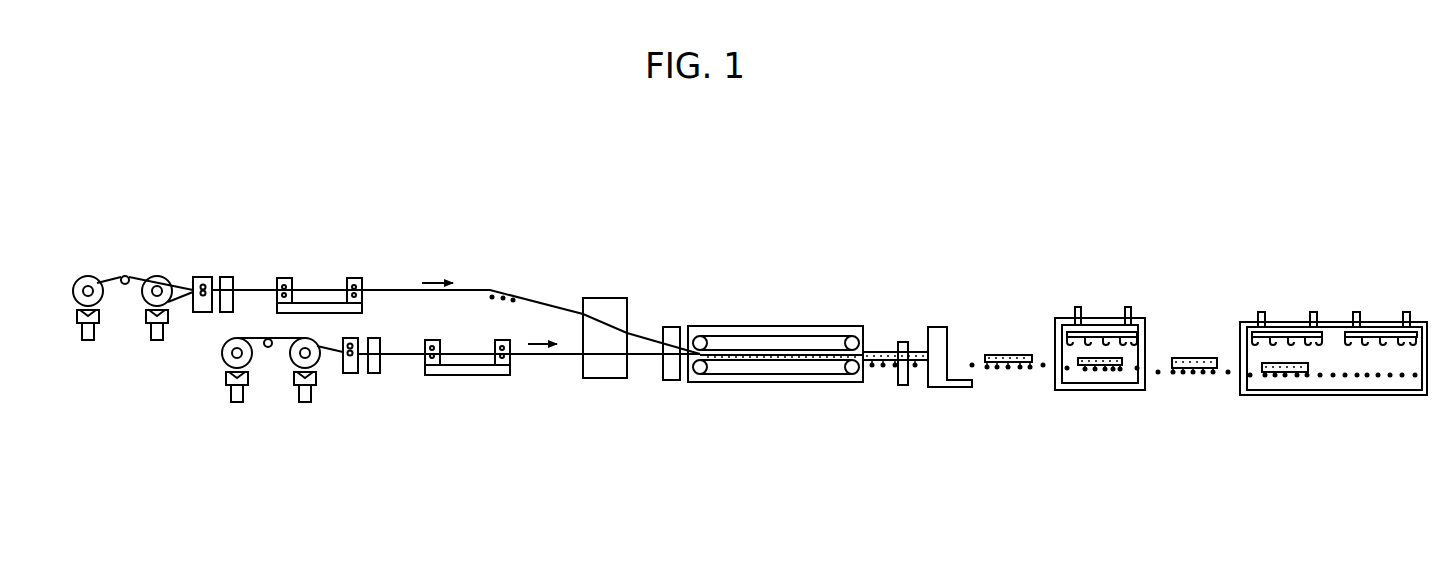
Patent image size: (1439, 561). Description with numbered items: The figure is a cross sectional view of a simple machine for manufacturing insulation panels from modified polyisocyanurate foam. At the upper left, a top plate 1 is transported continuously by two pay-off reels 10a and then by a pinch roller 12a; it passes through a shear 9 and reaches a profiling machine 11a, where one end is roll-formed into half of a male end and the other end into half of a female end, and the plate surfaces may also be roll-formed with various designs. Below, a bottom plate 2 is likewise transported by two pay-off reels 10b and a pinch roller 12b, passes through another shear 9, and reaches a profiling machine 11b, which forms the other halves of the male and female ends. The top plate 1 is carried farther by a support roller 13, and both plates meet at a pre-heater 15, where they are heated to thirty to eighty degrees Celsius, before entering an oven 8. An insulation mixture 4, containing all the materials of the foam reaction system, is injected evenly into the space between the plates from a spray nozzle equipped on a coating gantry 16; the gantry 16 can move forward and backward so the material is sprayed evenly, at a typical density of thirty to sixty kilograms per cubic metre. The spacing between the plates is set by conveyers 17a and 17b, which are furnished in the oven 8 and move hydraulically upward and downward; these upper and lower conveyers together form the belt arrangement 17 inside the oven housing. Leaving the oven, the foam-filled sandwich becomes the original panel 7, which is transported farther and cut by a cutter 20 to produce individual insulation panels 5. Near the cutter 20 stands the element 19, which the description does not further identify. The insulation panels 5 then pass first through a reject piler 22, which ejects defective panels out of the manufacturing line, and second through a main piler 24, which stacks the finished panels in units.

The top plate 1 is at (402, 290).
The bottom plate 2 is at (537, 357).
The insulation mixture 4 is at (815, 360).
The insulation panels 5 is at (998, 355).
The original panel 7 is at (877, 352).
The oven 8 is at (787, 383).
The shear 9 is at (232, 280).
The pay-off reels 10a is at (88, 276).
The pay-off reels 10b is at (223, 350).
The profiling machine 11a is at (357, 282).
The profiling machine 11b is at (483, 375).
The pinch roller 12a is at (203, 280).
The pinch roller 12b is at (350, 373).
The support roller 13 is at (507, 298).
The pre-heater 15 is at (608, 298).
The coating gantry 16 is at (673, 378).
The belt press 17 is at (776, 350).
The conveyer 17a is at (743, 334).
The conveyer 17b is at (757, 373).
The cutting device 19 is at (903, 385).
The cutter 20 is at (938, 338).
The reject piler 22 is at (1098, 390).
The main piler 24 is at (1312, 395).